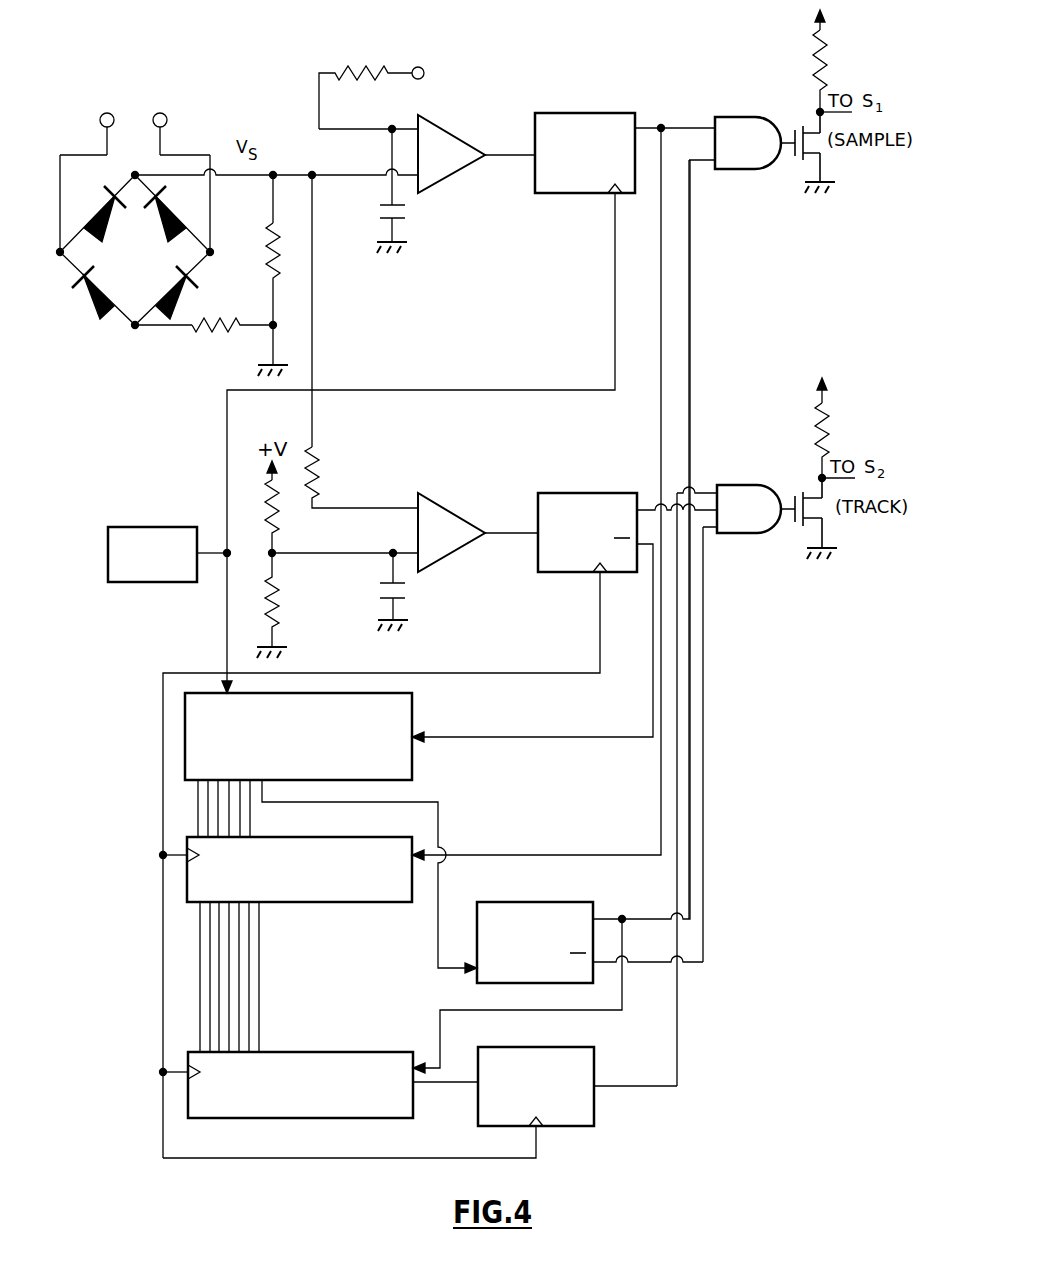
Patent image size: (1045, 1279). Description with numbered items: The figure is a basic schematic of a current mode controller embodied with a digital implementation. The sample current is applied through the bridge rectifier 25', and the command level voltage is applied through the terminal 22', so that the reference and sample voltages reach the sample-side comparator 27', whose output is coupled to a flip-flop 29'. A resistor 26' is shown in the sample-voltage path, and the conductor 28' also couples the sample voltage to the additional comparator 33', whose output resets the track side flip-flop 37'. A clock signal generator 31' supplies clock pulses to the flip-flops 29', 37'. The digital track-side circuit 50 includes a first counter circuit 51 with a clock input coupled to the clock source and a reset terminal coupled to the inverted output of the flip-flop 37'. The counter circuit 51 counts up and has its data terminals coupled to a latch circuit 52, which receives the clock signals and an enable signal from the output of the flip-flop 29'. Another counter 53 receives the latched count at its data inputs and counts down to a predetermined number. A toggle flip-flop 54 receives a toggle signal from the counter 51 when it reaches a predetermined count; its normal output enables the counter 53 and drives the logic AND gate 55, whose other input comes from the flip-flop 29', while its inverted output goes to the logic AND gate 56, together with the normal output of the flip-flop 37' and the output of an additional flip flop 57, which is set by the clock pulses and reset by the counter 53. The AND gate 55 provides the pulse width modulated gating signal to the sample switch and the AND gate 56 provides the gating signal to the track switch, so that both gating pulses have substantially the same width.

The terminal 22' is at (394, 81).
The bridge rectifier 25' is at (135, 221).
The resistor 26' is at (262, 275).
The sample-side comparator 27' is at (476, 164).
The conductor 28' is at (361, 341).
The flip-flop 29' is at (433, 383).
The clock signal generator 31' is at (167, 531).
The additional comparator 33' is at (478, 542).
The track side flip-flop 37' is at (403, 805).
The digital track-side circuit 50 is at (746, 621).
The first counter circuit 51 is at (412, 722).
The latch circuit 52 is at (390, 895).
The counter 53 is at (372, 1050).
The toggle flip-flop 54 is at (565, 900).
The logic AND gate 55 is at (737, 115).
The logic AND gate 56 is at (755, 483).
The additional flip flop 57 is at (578, 1128).